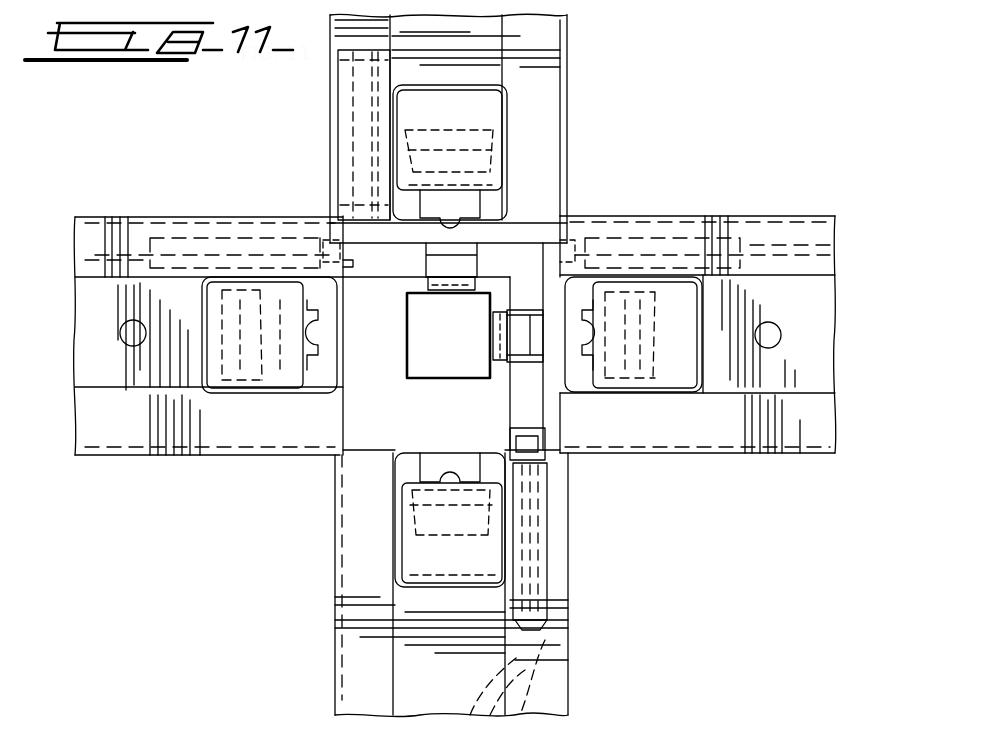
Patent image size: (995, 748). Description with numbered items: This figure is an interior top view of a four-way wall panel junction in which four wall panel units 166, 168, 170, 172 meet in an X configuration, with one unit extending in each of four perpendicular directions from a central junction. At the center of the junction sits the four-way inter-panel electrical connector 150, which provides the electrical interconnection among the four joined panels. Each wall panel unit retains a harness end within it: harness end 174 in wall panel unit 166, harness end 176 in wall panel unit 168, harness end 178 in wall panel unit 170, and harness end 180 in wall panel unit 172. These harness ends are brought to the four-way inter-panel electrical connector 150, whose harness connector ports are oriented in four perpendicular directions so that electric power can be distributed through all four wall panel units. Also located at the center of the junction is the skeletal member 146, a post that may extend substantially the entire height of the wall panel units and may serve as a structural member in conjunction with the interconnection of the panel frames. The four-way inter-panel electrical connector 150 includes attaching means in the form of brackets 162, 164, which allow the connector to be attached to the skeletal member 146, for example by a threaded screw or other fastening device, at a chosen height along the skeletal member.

The skeletal member 146 is at (407, 355).
The four-way inter-panel electrical connector 150 is at (520, 243).
The bracket 162 is at (425, 286).
The bracket 164 is at (505, 368).
The wall panel unit 166 is at (568, 515).
The wall panel unit 168 is at (735, 453).
The wall panel unit 170 is at (330, 160).
The wall panel unit 172 is at (170, 217).
The harness end 174 is at (540, 497).
The harness end 176 is at (655, 238).
The harness end 178 is at (355, 128).
The harness end 180 is at (243, 245).